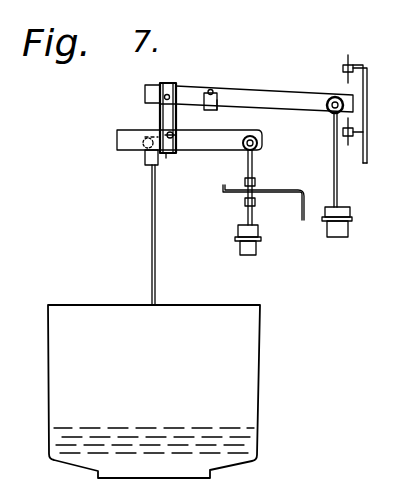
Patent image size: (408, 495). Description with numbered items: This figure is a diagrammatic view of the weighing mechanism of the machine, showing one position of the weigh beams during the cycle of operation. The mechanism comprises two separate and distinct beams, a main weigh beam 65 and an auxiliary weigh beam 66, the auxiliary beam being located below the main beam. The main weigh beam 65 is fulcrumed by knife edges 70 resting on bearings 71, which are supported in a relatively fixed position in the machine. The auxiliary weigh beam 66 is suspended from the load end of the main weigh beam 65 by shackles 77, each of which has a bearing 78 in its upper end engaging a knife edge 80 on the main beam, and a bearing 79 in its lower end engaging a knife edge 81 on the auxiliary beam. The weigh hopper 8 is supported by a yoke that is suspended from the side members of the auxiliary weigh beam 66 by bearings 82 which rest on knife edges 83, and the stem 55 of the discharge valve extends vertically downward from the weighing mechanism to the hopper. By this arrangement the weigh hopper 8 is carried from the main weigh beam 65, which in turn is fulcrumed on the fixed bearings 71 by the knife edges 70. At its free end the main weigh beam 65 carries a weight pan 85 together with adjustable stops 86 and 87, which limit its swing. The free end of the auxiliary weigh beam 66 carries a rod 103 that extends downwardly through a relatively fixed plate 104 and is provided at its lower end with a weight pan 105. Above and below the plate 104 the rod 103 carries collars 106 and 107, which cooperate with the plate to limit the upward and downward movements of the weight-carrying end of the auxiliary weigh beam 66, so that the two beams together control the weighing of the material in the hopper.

The weigh hopper 8 is at (154, 391).
The stem of the discharge valve 55 is at (151, 239).
The main weigh beam 65 is at (262, 92).
The auxiliary weigh beam 66 is at (212, 151).
The knife edges 70 is at (211, 90).
The bearings 71 is at (218, 106).
The shackles 77 is at (160, 111).
The bearing 78 is at (172, 85).
The bearing 79 is at (167, 154).
The knife edge 80 is at (160, 103).
The knife edge 81 is at (173, 137).
The bearings 82 is at (145, 137).
The knife edges 83 is at (145, 153).
The weight pan 85 is at (342, 224).
The adjustable stop 86 is at (343, 70).
The adjustable stop 87 is at (350, 147).
The rod 103 is at (256, 149).
The relatively fixed plate 104 is at (258, 195).
The weight pan 105 is at (250, 247).
The collar 106 is at (256, 182).
The collar 107 is at (245, 201).